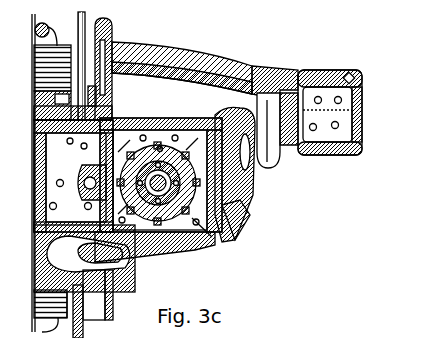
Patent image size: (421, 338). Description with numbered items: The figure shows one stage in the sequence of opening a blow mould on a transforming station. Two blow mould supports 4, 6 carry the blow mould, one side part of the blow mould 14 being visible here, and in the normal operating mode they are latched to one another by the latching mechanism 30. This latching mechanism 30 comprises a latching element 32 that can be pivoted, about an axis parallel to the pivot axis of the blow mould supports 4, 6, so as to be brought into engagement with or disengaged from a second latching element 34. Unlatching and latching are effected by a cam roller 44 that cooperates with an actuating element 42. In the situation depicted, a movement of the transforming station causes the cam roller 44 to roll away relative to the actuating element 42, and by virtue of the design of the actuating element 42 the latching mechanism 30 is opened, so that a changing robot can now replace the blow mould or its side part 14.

The blow mould support 4 is at (215, 246).
The blow mould support 6 is at (128, 122).
The side part of the blow mould 14 is at (226, 230).
The latching mechanism 30 is at (266, 215).
The latching element 32 is at (250, 188).
The second latching element 34 is at (240, 200).
The actuating element 42 is at (270, 140).
The cam roller 44 is at (252, 66).